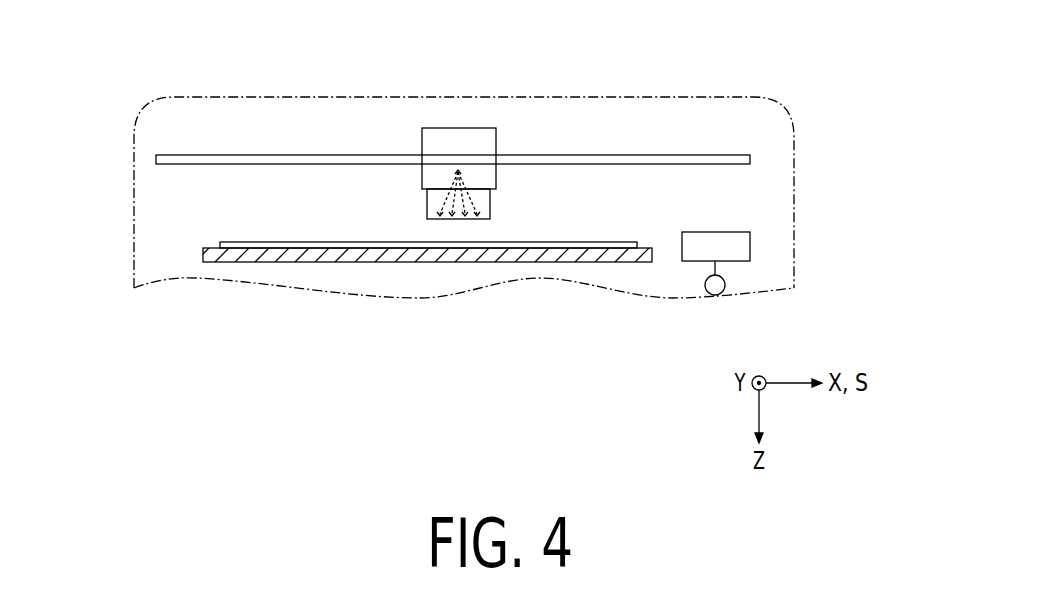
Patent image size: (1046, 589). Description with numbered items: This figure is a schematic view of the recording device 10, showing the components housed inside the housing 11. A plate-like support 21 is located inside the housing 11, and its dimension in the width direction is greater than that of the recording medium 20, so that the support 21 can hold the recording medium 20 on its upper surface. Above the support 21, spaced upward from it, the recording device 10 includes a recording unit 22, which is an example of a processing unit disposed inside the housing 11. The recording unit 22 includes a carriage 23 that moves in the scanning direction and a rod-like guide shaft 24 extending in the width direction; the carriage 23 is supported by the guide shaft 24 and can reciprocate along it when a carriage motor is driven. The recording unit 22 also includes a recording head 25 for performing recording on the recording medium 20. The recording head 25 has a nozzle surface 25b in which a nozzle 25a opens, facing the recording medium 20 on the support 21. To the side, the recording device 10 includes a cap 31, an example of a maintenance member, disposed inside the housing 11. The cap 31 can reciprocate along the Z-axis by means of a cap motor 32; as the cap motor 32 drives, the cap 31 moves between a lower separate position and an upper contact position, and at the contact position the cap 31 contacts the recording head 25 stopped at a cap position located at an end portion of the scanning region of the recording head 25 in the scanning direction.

The recording device 10 is at (782, 47).
The housing 11 is at (694, 97).
The recording medium 20 is at (598, 241).
The support 21 is at (602, 262).
The recording unit 22 is at (453, 144).
The carriage 23 is at (497, 140).
The guide shaft 24 is at (612, 152).
The recording head 25 is at (453, 188).
The nozzle 25a is at (458, 158).
The nozzle surface 25b is at (427, 220).
The cap 31 is at (750, 247).
The cap motor 32 is at (725, 285).